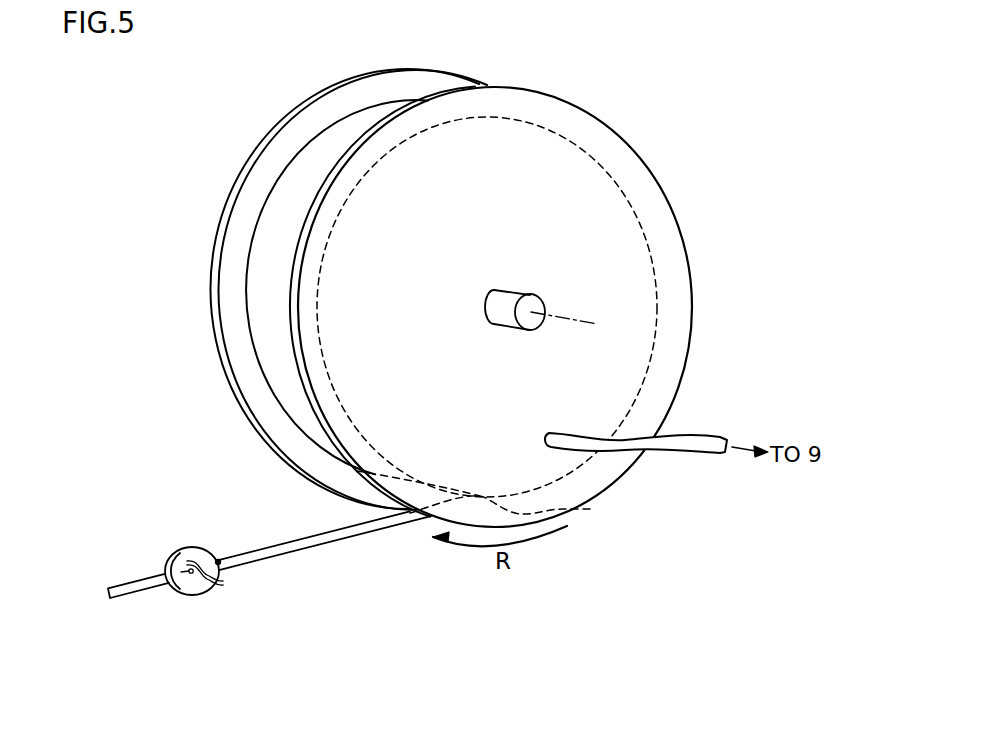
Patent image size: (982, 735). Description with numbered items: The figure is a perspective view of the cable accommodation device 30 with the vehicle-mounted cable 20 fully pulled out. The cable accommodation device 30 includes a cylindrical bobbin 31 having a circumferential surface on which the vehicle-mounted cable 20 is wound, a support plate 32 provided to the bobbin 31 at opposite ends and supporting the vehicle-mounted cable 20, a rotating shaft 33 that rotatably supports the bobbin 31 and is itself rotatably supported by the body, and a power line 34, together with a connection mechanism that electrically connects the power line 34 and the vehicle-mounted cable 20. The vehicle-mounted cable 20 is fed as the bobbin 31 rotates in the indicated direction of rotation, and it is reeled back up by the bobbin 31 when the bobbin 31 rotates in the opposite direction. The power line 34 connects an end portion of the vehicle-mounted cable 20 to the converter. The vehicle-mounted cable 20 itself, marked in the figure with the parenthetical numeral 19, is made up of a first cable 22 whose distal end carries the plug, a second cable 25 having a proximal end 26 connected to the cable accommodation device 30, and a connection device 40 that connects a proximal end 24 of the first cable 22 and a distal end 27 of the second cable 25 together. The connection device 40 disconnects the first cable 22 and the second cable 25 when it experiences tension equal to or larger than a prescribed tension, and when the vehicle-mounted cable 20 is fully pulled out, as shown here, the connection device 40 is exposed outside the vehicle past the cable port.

The cable accommodation device 30 is at (637, 88).
The bobbin 31 is at (333, 153).
The support plate 32 is at (462, 183).
The rotating shaft 33 is at (503, 305).
The power line 34 is at (707, 437).
The proximal end 26 is at (590, 509).
The second cable 25 is at (323, 535).
The first cable 22 is at (121, 587).
The tube 19 is at (260, 560).
The vehicle-mounted cable 20 is at (253, 584).
The connection device 40 is at (190, 582).
The proximal end 24 is at (165, 580).
The distal end 27 is at (223, 560).